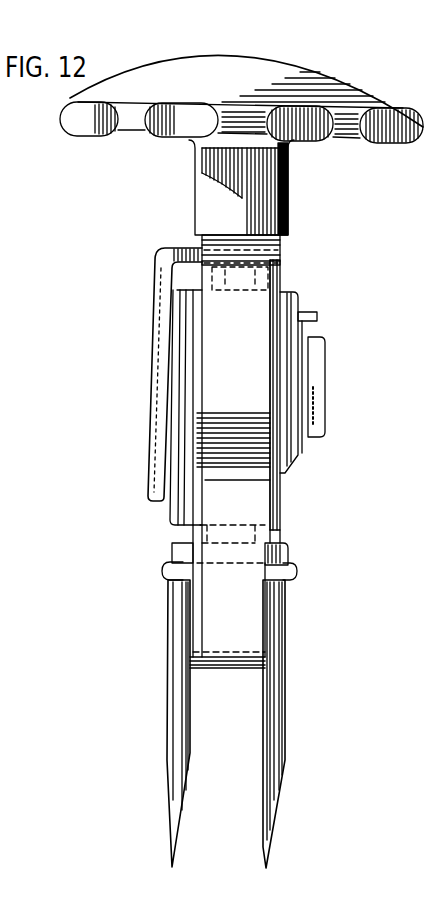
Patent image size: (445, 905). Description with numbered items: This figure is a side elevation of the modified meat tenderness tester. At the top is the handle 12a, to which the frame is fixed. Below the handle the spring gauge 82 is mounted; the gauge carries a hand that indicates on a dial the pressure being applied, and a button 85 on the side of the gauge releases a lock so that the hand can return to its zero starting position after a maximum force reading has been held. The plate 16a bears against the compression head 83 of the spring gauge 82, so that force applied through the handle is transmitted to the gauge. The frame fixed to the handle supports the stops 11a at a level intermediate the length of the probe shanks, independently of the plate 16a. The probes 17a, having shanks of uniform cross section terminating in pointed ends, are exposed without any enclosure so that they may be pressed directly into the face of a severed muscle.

The handle 12a is at (290, 200).
The spring gauge 82 is at (290, 510).
The button 85 is at (317, 320).
The compression head 83 is at (221, 525).
The plate 16a is at (288, 553).
The stops 11a is at (287, 647).
The prongs 17a is at (283, 772).